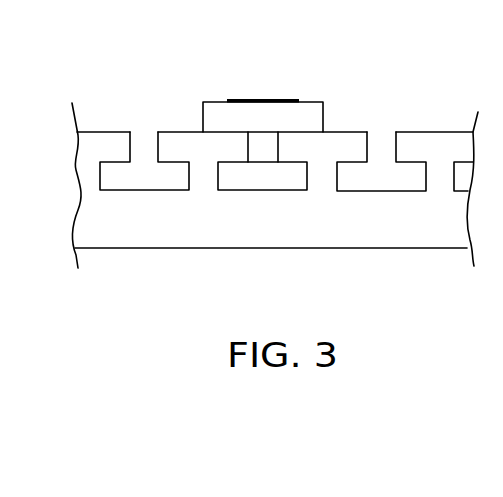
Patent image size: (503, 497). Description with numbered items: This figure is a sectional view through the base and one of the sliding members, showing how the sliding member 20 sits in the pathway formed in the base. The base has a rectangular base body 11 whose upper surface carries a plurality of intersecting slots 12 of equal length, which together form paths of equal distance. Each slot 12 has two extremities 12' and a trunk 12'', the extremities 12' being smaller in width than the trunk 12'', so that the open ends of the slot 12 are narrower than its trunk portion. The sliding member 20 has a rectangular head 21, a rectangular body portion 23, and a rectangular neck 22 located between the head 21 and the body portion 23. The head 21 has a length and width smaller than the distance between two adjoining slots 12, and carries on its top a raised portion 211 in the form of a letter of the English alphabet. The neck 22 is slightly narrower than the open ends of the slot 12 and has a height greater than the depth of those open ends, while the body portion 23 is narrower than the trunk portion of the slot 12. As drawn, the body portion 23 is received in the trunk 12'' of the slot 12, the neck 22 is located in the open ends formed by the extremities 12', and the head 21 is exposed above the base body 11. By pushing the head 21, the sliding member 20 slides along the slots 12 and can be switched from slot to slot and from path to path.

The base body 11 is at (275, 228).
The slot 12 is at (381, 221).
The extremity of slot 12' is at (139, 235).
The trunk of slot 12'' is at (118, 96).
The sliding member 20 is at (405, 61).
The head 21 is at (313, 100).
The raised portion 211 is at (250, 100).
The neck 22 is at (270, 147).
The body portion 23 is at (297, 178).